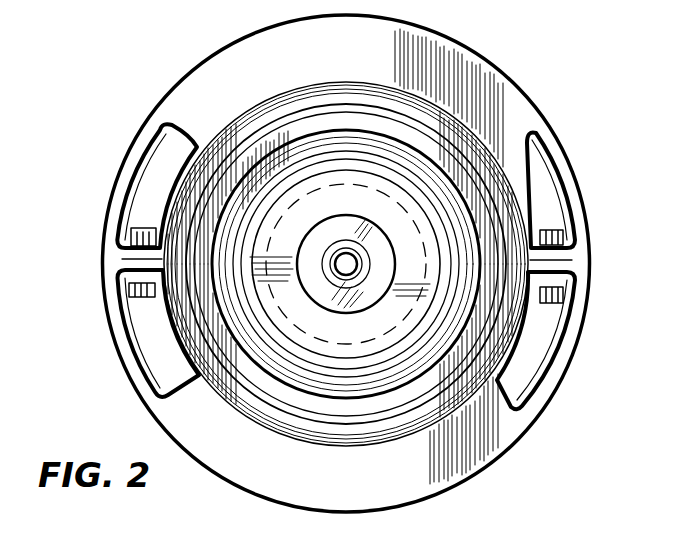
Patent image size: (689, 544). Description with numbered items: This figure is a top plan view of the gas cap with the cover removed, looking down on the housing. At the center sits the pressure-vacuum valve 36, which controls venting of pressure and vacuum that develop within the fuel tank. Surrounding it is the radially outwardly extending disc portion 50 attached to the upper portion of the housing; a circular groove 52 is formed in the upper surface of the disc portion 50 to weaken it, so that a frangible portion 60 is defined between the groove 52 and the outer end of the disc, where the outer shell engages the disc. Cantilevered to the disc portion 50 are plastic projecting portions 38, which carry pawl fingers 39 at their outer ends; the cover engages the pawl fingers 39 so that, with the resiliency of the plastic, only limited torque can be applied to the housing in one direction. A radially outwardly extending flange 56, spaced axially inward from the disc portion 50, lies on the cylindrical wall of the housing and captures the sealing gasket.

The pressure-vacuum valve 36 is at (483, 163).
The projecting portions 38 is at (162, 172).
The pawl fingers 39 is at (133, 224).
The disc portion 50 is at (482, 80).
The circular groove 52 is at (537, 187).
The radially outwardly extending flange 56 is at (137, 263).
The frangible portion 60 is at (490, 182).